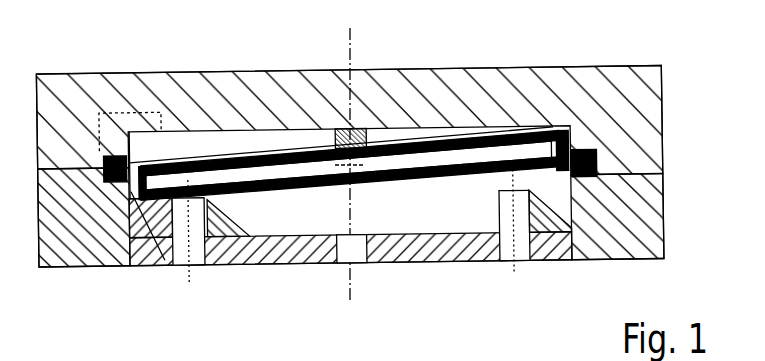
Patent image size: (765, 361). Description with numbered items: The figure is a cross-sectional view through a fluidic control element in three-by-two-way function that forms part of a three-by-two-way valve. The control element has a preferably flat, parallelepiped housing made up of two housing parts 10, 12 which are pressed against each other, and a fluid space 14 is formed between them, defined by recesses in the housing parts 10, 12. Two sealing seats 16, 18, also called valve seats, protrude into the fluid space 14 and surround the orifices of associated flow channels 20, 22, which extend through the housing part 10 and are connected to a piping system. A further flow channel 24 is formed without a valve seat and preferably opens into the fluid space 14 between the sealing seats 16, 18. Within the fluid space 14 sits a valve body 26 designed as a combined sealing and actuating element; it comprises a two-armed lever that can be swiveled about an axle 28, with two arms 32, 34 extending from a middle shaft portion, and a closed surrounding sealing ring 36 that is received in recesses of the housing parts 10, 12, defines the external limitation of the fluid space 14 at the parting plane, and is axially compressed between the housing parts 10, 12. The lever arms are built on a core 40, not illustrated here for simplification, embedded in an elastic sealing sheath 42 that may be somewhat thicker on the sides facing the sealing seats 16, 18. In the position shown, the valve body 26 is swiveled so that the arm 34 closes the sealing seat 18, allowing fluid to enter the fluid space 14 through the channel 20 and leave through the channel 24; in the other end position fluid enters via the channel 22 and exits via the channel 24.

The housing part 10 is at (100, 112).
The housing part 12 is at (85, 230).
The fluid space 14 is at (185, 143).
The sealing seat 16 is at (537, 218).
The sealing seat 18 is at (227, 230).
The flow channel 20 is at (505, 228).
The flow channel 22 is at (198, 230).
The flow channel 24 is at (358, 247).
The valve body 26 is at (448, 149).
The axle 28 is at (352, 132).
The arm 32 is at (523, 163).
The arm 34 is at (238, 163).
The sealing ring 36 is at (585, 153).
The core 40 is at (302, 168).
The sealing sheath 42 is at (158, 197).